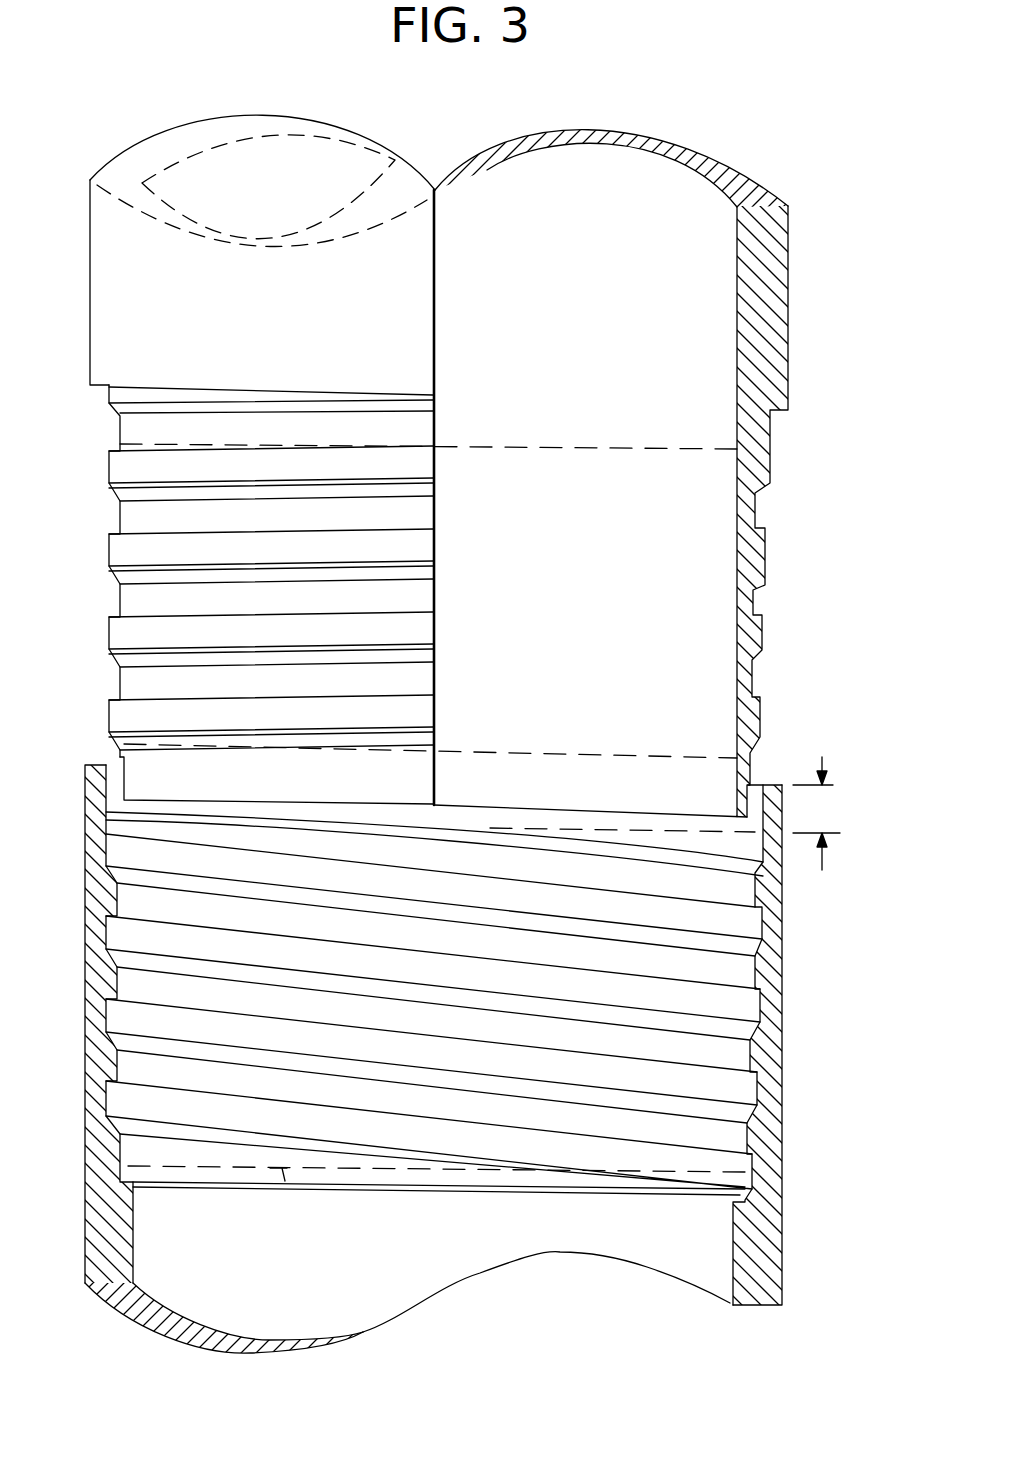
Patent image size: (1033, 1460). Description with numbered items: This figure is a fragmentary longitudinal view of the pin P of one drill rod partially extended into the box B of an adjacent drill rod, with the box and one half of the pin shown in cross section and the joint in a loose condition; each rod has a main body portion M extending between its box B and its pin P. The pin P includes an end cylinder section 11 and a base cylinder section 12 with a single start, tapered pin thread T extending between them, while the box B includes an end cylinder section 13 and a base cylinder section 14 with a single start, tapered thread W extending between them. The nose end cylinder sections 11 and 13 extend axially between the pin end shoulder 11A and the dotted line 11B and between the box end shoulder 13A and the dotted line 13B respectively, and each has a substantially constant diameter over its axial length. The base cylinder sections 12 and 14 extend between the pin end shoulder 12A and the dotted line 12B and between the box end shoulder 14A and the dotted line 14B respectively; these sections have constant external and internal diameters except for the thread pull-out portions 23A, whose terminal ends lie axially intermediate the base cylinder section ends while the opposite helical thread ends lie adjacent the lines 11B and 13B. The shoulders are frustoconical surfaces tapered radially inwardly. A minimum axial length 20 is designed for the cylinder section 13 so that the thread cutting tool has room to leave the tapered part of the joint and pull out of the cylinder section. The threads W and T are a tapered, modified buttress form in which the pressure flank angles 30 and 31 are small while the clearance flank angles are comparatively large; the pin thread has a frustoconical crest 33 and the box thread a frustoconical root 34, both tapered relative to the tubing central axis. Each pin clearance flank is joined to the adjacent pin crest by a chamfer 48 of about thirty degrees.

The end cylinder section 11 is at (557, 770).
The pin end shoulder 11A is at (335, 803).
The dotted line 11B is at (455, 755).
The base cylinder section 12 is at (772, 433).
The pin end shoulder 12A is at (216, 386).
The dotted line 12B is at (598, 446).
The end cylinder section 13 is at (85, 783).
The box end shoulder 13A is at (772, 785).
The dotted line 13B is at (693, 830).
The base cylinder section 14 is at (370, 1172).
The box end shoulder 14A is at (182, 1184).
The dotted line 14B is at (284, 1170).
The minimum axial length of a cylinder section 20 is at (820, 813).
The portions of the threads 23A is at (170, 425).
The angle of the pressure flank 30 is at (612, 1015).
The angle of the pressure flank 31 is at (418, 569).
The crest 33 is at (425, 550).
The root 34 is at (740, 1095).
The chamfer 48 is at (420, 645).
The pin thread T is at (115, 553).
The pin P is at (750, 591).
The main body portion M is at (783, 304).
The box B is at (785, 1013).
The box thread W is at (517, 1118).